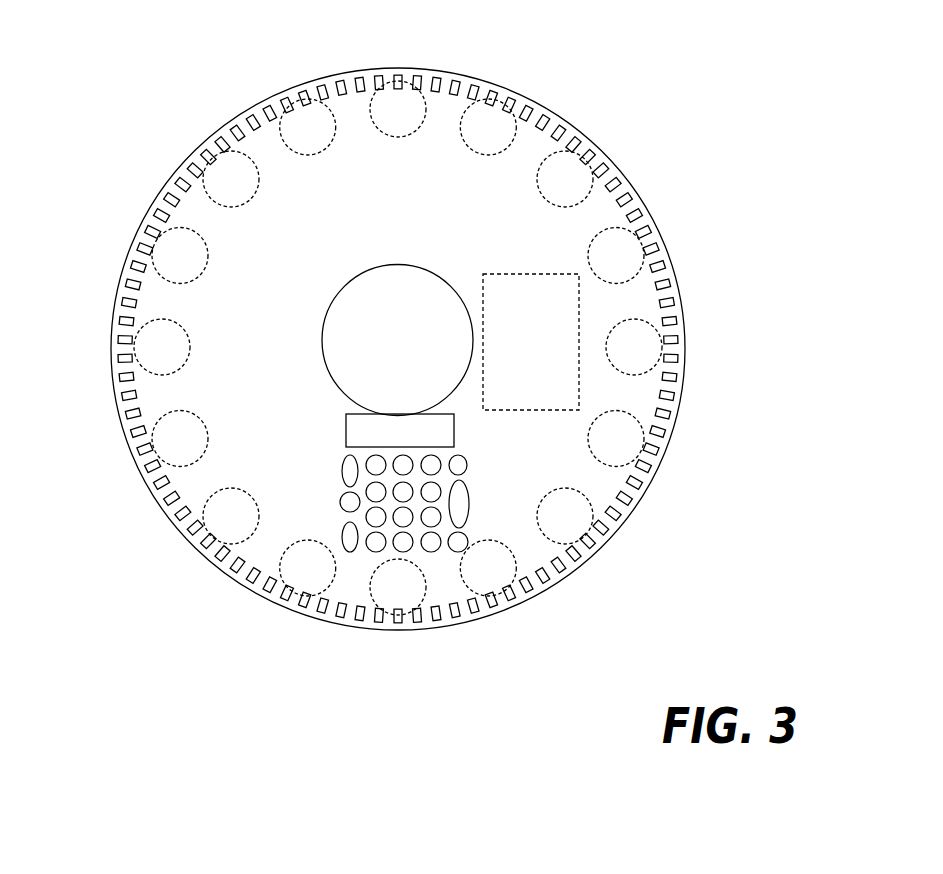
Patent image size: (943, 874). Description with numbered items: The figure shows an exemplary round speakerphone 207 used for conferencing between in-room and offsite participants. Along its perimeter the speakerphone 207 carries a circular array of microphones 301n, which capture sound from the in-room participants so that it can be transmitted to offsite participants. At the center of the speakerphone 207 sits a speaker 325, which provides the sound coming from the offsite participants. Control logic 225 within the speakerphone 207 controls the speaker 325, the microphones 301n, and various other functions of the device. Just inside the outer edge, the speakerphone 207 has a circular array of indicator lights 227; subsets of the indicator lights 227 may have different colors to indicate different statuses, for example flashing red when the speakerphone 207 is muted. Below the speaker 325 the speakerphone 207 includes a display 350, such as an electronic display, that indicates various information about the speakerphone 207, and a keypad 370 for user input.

The speakerphone 207 is at (714, 88).
The indicator lights 227 is at (615, 193).
The microphones 301n is at (490, 130).
The speaker 325 is at (380, 368).
The display 350 is at (368, 428).
The control logic 225 is at (537, 367).
The keypad 370 is at (388, 502).